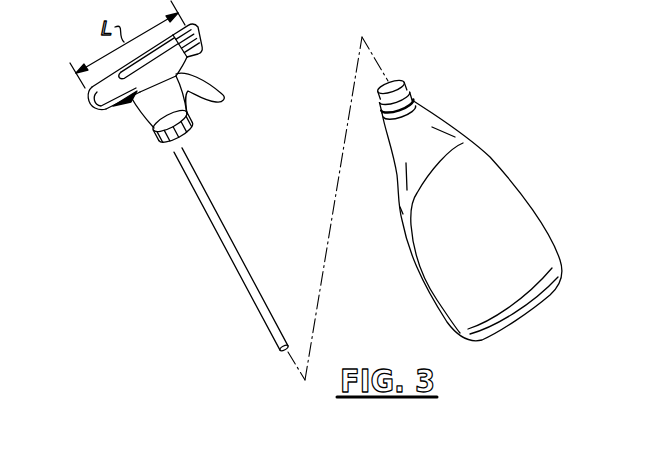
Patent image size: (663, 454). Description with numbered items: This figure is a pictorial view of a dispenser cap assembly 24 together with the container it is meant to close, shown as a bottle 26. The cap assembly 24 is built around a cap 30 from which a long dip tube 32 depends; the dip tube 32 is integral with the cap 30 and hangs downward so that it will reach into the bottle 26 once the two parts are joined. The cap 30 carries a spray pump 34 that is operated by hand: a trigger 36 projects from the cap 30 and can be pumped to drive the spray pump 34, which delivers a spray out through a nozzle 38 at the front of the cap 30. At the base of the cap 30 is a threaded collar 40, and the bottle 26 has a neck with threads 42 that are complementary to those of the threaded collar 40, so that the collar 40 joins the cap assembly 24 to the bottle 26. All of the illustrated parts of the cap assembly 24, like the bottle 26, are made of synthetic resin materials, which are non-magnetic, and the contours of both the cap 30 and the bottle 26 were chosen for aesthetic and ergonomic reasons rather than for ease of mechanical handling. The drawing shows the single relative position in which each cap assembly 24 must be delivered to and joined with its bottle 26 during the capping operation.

The cap assembly 24 is at (175, 153).
The bottle 26 is at (503, 165).
The cap 30 is at (150, 100).
The dip tube 32 is at (235, 247).
The spray pump 34 is at (92, 97).
The trigger 36 is at (191, 82).
The nozzle 38 is at (194, 30).
The threaded collar 40 is at (191, 118).
The threads 42 is at (406, 81).